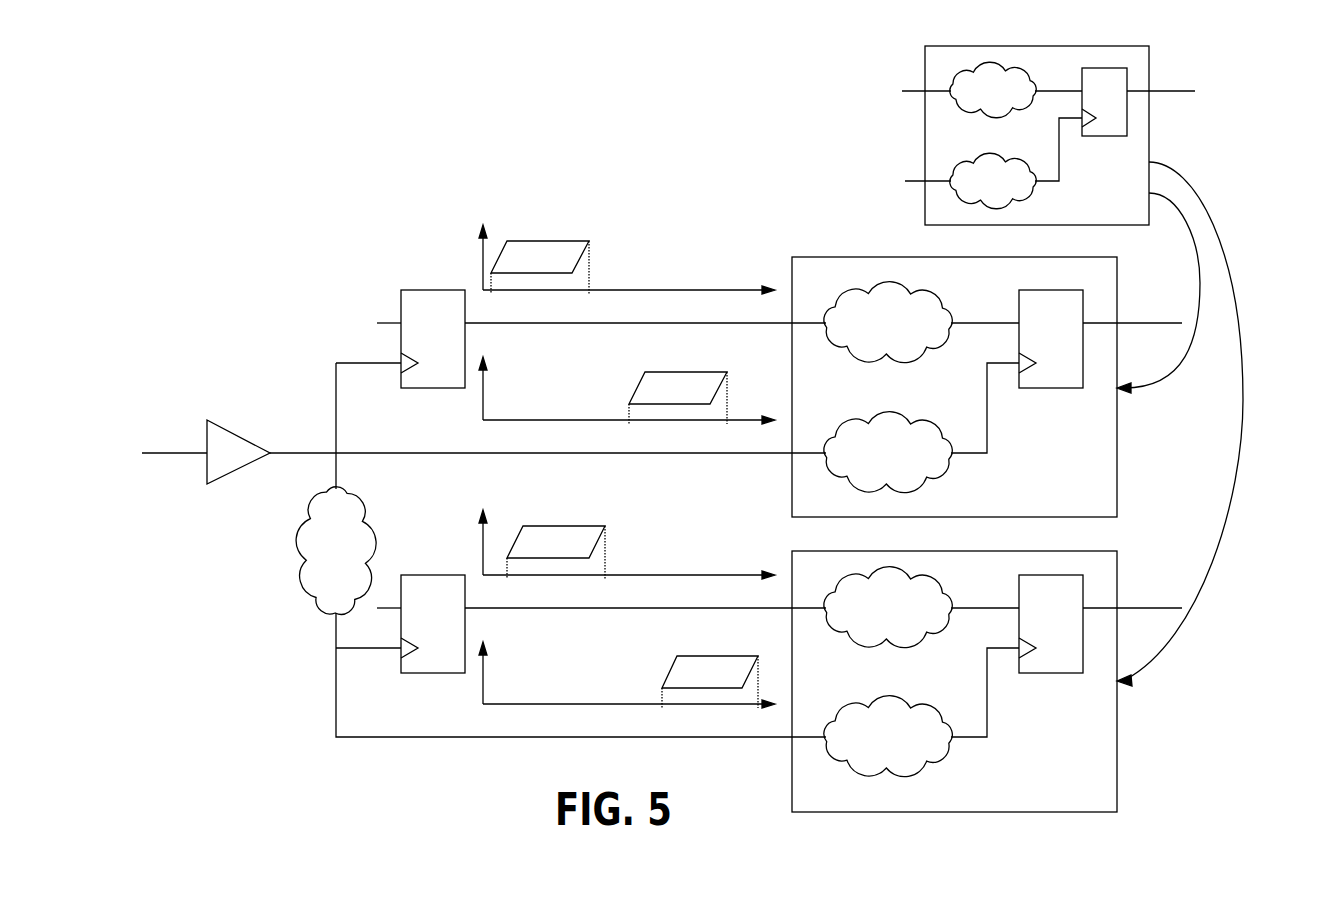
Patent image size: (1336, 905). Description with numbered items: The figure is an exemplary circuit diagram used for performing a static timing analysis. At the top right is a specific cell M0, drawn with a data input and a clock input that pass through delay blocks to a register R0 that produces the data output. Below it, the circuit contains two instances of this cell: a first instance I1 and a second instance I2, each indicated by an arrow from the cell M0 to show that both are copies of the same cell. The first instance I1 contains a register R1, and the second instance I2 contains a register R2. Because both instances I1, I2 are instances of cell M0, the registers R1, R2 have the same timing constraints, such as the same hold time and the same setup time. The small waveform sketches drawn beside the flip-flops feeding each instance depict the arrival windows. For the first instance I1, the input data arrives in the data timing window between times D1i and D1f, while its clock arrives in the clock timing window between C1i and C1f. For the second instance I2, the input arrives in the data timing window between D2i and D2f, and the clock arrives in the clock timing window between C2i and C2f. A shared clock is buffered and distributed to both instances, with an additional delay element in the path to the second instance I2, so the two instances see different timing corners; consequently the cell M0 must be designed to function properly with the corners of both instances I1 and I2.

The specific cell M0 is at (1051, 135).
The register of master module R0 is at (1104, 102).
The first instance I1 is at (954, 387).
The register R1 is at (1100, 339).
The second instance I2 is at (954, 681).
The register R2 is at (1100, 624).
The data timing window start time D1i is at (492, 296).
The data timing window end time D1f is at (591, 280).
The clock timing window start time C1i is at (629, 427).
The clock timing window end time C1f is at (727, 411).
The data timing window start time D2i is at (507, 581).
The data timing window end time D2f is at (606, 565).
The clock timing window start time C2i is at (661, 711).
The clock timing window end time C2f is at (758, 695).